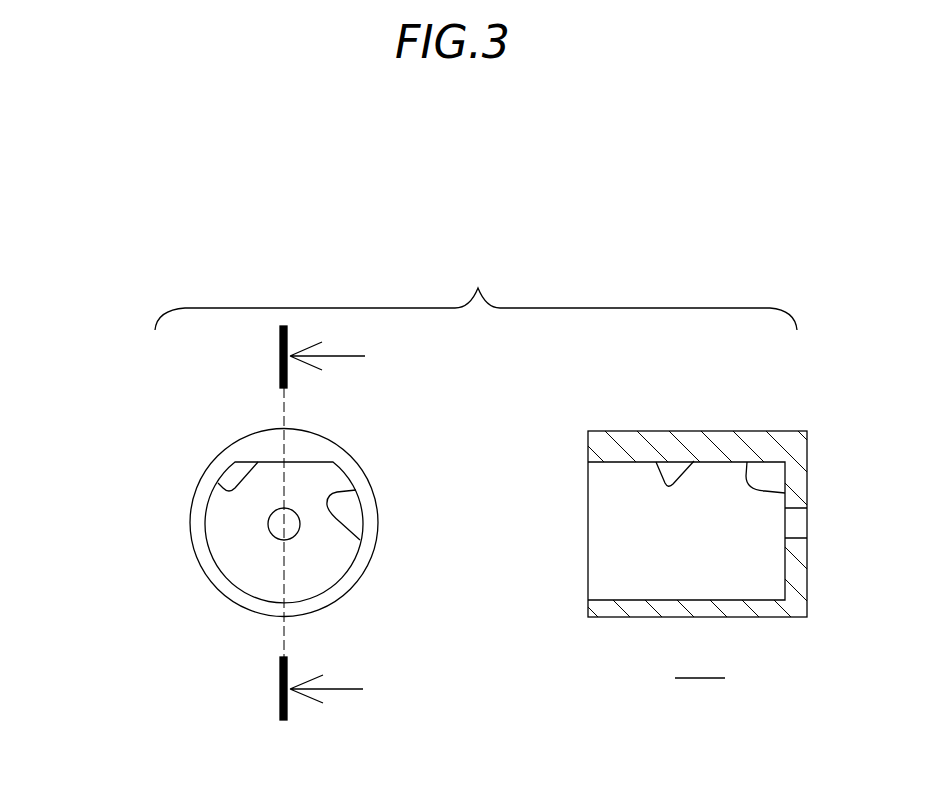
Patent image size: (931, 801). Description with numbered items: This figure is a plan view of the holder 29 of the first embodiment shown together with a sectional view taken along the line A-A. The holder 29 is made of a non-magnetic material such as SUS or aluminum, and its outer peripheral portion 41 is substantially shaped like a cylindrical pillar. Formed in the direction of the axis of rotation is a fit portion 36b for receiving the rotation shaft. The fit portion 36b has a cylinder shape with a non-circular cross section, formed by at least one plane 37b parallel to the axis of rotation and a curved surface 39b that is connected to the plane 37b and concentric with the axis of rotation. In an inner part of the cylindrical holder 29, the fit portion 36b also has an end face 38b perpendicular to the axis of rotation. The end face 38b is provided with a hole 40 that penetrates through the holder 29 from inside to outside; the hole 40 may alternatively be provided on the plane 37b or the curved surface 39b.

The holder 29 is at (505, 773).
The fit portion 36b is at (497, 278).
The plane 37b is at (226, 487).
The end face 38b is at (747, 462).
The curved surface 39b is at (357, 490).
The hole 40 is at (269, 530).
The outer peripheral portion 41 is at (188, 516).